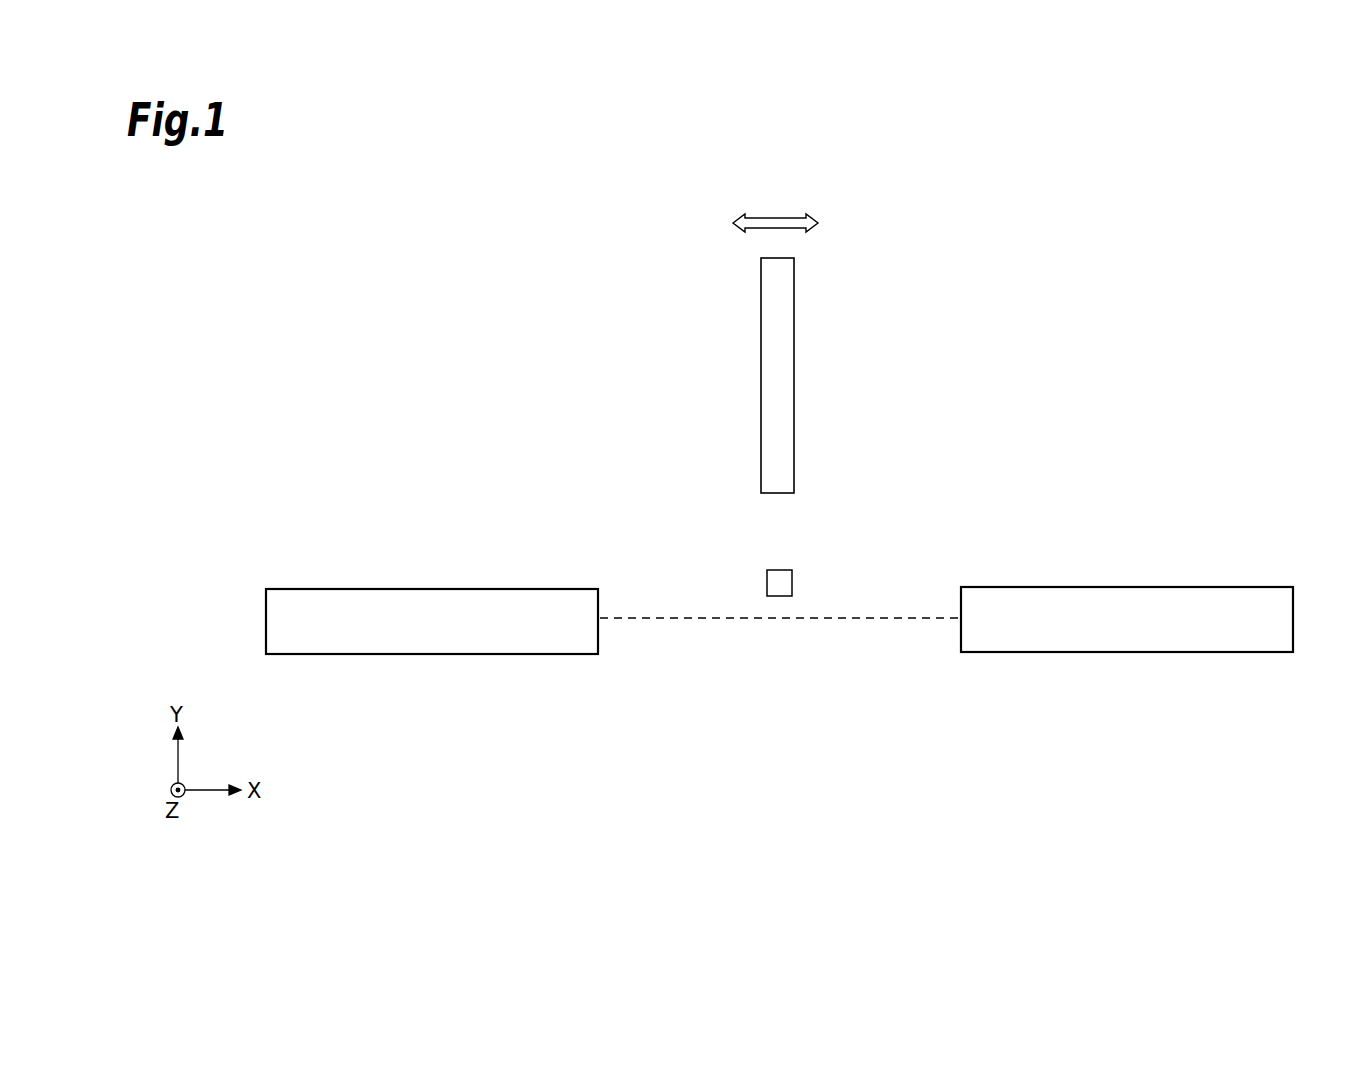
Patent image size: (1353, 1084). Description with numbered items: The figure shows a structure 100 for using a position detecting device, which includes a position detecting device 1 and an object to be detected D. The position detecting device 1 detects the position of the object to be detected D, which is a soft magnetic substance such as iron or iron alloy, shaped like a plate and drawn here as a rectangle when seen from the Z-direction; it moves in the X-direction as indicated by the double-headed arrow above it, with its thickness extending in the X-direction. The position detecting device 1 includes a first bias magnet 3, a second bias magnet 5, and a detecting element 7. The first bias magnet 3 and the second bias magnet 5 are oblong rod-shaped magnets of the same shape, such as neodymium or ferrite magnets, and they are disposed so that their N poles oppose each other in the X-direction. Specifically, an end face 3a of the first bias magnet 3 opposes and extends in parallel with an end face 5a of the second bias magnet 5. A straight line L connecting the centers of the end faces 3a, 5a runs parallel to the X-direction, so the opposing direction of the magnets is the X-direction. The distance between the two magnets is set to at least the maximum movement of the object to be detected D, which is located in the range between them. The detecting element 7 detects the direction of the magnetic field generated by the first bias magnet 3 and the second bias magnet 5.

The structure for using a position detecting device 100 is at (380, 232).
The position detecting device 1 is at (1126, 272).
The object to be detected D is at (760, 372).
The first bias magnet 3 is at (295, 588).
The end face of the first bias magnet 3a is at (600, 599).
The second bias magnet 5 is at (1259, 586).
The end face of the second bias magnet 5a is at (959, 594).
The detecting element 7 is at (793, 573).
The straight line L is at (876, 624).